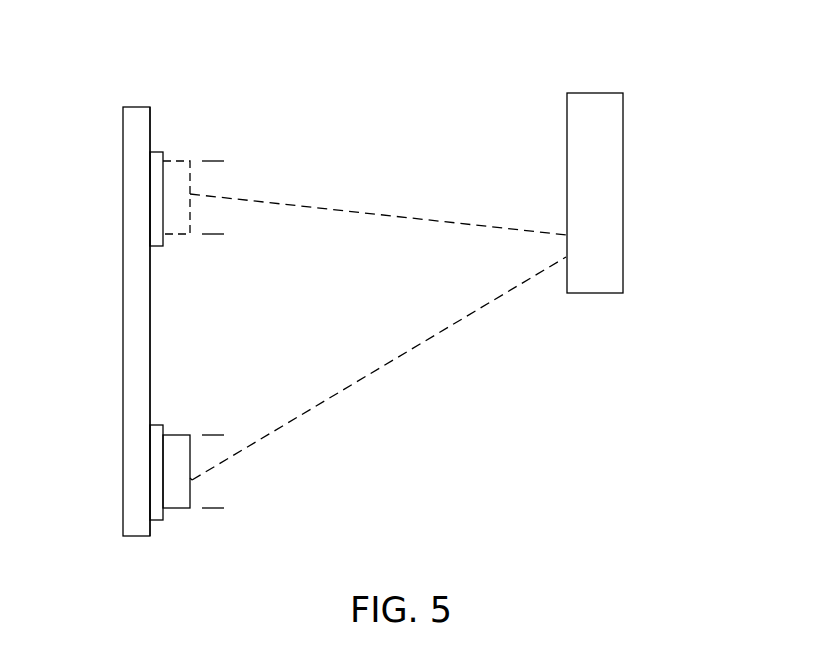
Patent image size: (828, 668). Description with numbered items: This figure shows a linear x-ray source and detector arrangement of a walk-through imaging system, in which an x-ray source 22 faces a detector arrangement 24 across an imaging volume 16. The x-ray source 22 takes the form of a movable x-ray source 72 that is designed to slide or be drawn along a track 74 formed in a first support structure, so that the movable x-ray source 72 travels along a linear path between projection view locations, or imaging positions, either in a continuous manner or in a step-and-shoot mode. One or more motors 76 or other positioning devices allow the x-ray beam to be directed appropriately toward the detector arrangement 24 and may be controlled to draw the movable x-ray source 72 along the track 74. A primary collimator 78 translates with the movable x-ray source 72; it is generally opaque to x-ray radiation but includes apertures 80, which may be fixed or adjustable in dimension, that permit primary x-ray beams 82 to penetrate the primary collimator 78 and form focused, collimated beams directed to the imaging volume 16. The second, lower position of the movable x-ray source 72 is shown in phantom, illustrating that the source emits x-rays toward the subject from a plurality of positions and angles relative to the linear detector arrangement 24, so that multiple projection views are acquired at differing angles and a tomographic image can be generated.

The imaging volume 16 is at (377, 293).
The x-ray source 22 is at (100, 427).
The detector arrangement 24 is at (617, 48).
The movable x-ray source 72 is at (187, 234).
The track 74 is at (150, 118).
The motors 76 is at (156, 247).
The primary collimator 78 is at (224, 514).
The apertures 80 is at (222, 491).
The primary x-ray beams 82 is at (363, 200).